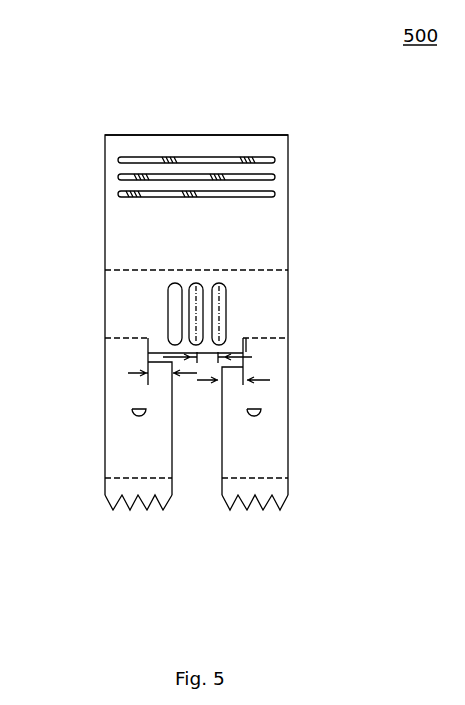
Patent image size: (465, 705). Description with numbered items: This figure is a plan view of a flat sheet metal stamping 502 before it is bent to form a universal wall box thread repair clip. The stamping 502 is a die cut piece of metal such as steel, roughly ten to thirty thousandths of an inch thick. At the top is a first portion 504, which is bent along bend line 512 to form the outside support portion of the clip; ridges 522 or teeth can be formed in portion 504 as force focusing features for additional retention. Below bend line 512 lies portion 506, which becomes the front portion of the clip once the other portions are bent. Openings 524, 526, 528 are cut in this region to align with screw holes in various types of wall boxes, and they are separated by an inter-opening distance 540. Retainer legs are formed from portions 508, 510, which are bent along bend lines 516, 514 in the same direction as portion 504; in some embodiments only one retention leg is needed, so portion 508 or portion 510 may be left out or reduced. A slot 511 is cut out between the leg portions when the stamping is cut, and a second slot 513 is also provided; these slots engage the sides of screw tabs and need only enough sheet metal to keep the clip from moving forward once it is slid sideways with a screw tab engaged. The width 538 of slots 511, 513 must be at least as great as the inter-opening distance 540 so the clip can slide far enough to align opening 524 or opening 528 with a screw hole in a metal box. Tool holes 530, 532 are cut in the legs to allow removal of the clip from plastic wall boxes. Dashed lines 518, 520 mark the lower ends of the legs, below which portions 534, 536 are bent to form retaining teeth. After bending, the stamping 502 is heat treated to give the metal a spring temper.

The sheet metal stamping 502 is at (291, 190).
The first portion 504 is at (105, 168).
The front portion 506 is at (105, 290).
The retainer leg portion 508 is at (105, 365).
The retainer leg portion 510 is at (288, 372).
The slot 511 is at (140, 355).
The bend line 512 is at (272, 270).
The slot 513 is at (247, 363).
The bend line 514 is at (273, 337).
The bend line 516 is at (128, 337).
The first leg lower boundary 518 is at (118, 478).
The second leg lower boundary 520 is at (275, 478).
The ridges 522 is at (153, 158).
The opening 524 is at (170, 290).
The opening 526 is at (205, 283).
The opening 528 is at (230, 298).
The tool hole 530 is at (130, 413).
The tool hole 532 is at (262, 412).
The teeth portion 534 is at (112, 508).
The teeth portion 536 is at (278, 508).
The slot width 538 is at (128, 373).
The inter-opening distance 540 is at (242, 335).